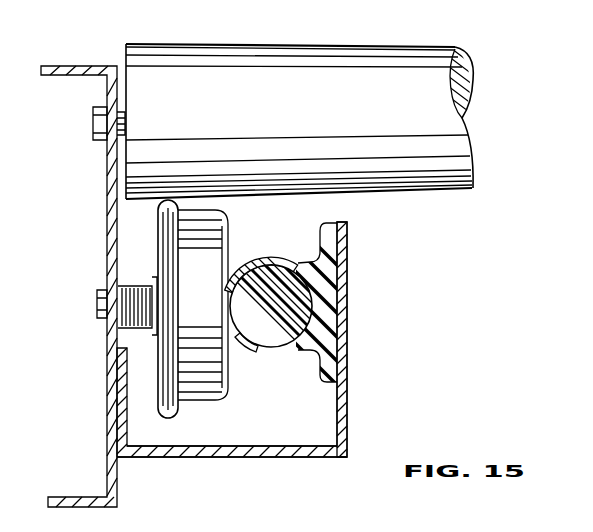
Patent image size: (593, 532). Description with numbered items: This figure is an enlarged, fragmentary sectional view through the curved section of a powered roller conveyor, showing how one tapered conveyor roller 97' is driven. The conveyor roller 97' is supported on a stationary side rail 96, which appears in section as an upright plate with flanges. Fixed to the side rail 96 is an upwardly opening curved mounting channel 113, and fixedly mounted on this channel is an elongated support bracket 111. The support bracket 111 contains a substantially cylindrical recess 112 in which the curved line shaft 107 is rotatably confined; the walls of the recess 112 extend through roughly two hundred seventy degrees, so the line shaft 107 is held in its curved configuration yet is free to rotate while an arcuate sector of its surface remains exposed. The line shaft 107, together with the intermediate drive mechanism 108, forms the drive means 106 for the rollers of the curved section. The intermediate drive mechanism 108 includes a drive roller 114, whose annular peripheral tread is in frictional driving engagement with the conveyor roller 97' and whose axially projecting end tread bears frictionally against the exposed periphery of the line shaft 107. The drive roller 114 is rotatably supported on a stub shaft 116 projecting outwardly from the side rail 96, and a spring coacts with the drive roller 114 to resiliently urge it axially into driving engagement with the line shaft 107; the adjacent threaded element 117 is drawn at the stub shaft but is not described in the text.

The tapered conveyor roller 97' is at (303, 105).
The side rail 96 is at (108, 208).
The drive means 106 is at (355, 262).
The curved line shaft 107 is at (264, 313).
The intermediate drive mechanism 108 is at (148, 335).
The support bracket 111 is at (318, 318).
The cylindrical recess 112 is at (256, 264).
The mounting channel 113 is at (247, 452).
The drive roller 114 is at (190, 268).
The stub shaft 116 is at (98, 305).
The threaded stem 117 is at (118, 324).